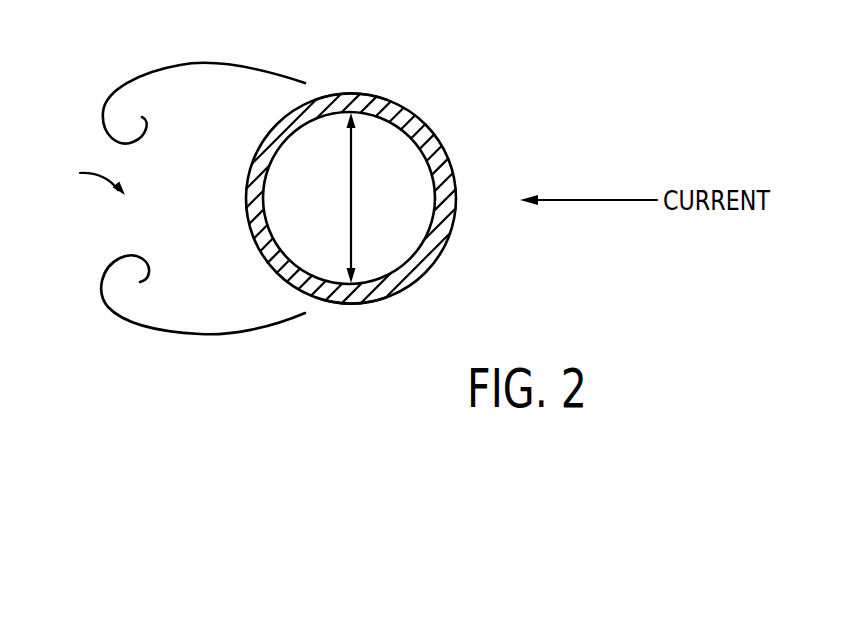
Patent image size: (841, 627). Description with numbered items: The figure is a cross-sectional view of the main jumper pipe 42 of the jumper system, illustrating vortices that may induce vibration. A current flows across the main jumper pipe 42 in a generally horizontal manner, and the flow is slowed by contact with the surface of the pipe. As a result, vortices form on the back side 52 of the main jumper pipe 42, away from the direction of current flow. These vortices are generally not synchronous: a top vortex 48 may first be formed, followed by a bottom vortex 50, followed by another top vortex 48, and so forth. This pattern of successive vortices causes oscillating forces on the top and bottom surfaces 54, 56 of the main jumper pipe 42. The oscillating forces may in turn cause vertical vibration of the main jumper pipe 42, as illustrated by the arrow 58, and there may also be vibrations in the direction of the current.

The main jumper pipe 42 is at (427, 122).
The top vortex 48 is at (197, 62).
The bottom vortex 50 is at (197, 337).
The back side 52 is at (86, 177).
The top surface 54 is at (352, 95).
The bottom surface 56 is at (350, 305).
The arrow 58 is at (351, 199).